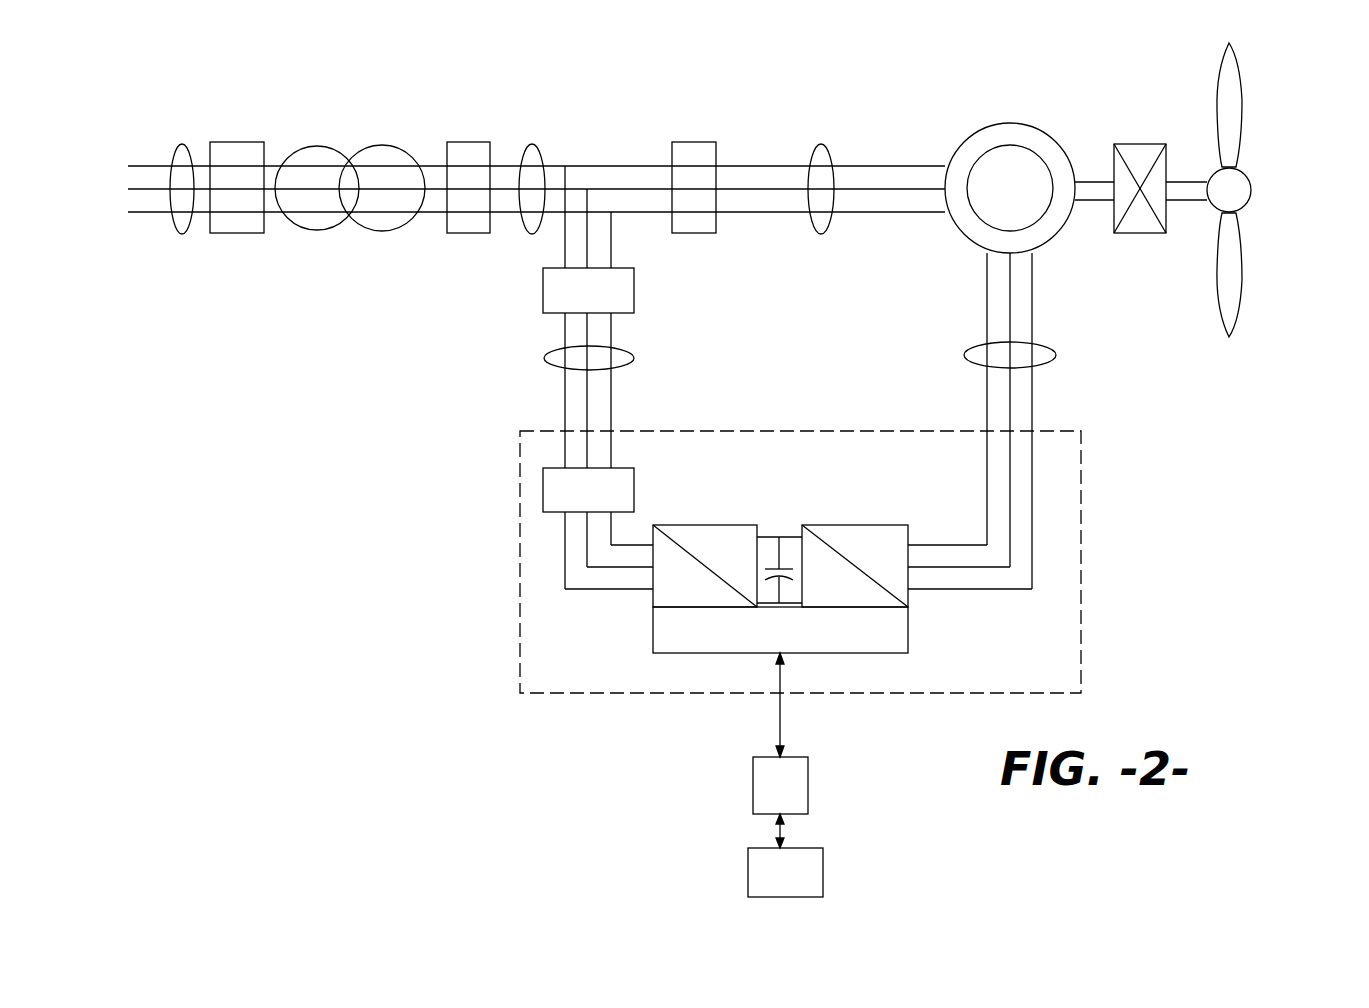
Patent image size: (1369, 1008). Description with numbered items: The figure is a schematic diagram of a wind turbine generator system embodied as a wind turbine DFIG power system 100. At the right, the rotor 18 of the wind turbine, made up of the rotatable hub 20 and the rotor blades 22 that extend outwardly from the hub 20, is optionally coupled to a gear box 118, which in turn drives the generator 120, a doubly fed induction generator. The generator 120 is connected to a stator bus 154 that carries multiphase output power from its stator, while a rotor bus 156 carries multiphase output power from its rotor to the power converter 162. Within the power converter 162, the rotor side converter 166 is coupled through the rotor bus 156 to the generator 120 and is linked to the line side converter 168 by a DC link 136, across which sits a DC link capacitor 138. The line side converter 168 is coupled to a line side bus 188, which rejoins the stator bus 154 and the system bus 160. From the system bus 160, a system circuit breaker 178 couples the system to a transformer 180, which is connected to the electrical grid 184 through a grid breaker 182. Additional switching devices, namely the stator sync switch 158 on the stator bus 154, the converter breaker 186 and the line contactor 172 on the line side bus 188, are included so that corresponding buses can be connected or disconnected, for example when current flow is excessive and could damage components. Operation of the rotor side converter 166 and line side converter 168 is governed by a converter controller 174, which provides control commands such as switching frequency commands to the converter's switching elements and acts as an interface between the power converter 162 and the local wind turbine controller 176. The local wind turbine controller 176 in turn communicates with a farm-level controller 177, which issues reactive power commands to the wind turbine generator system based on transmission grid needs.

The rotor 18 is at (1278, 193).
The rotatable hub 20 is at (1253, 186).
The rotor blade 22 is at (1241, 110).
The wind turbine DFIG power system 100 is at (387, 548).
The gear box 118 is at (1140, 144).
The generator 120 is at (1010, 123).
The DC link 136 is at (809, 527).
The DC link capacitor 138 is at (772, 566).
The stator bus 154 is at (822, 144).
The rotor bus 156 is at (1056, 356).
The stator sync switch 158 is at (693, 142).
The system bus 160 is at (535, 144).
The power converter 162 is at (1081, 528).
The rotor side converter 166 is at (908, 598).
The line side converter 168 is at (653, 600).
The line contactor 172 is at (543, 490).
The converter controller 174 is at (700, 653).
The local wind turbine controller 176 is at (808, 782).
The farm-level controller 177 is at (823, 876).
The system circuit breaker 178 is at (468, 142).
The transformer 180 is at (376, 146).
The grid breaker 182 is at (237, 142).
The electrical grid 184 is at (183, 143).
The converter breaker 186 is at (543, 293).
The line side bus 188 is at (548, 362).